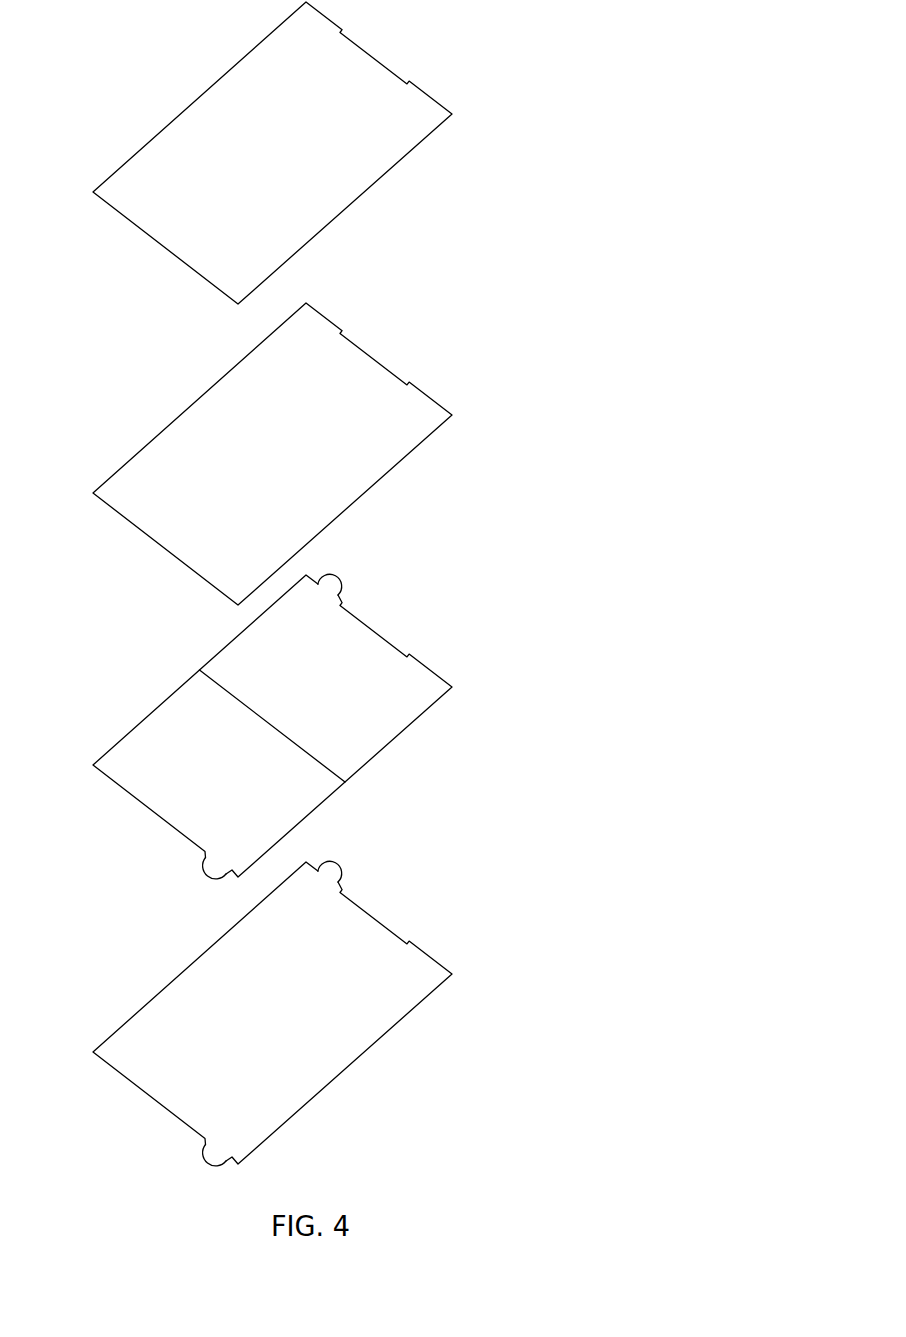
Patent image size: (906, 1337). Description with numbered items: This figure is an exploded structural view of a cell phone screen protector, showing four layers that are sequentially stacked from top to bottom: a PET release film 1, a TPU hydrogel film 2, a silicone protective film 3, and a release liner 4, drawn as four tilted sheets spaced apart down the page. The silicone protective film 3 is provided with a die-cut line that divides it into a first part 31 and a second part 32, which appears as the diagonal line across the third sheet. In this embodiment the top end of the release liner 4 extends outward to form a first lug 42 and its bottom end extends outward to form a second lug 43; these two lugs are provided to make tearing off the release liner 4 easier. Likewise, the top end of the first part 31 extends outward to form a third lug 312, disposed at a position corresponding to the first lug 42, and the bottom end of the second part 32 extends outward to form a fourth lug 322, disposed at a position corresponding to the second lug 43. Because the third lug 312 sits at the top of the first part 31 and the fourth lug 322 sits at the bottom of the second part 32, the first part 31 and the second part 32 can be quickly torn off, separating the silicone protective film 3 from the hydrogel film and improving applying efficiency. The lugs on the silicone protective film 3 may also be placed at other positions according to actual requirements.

The PET release film 1 is at (392, 127).
The TPU hydrogel film 2 is at (405, 425).
The silicone protective film 3 is at (319, 736).
The first part 31 is at (362, 674).
The third lug 312 is at (340, 583).
The second part 32 is at (253, 788).
The fourth lug 322 is at (214, 869).
The release liner 4 is at (305, 1013).
The first lug 42 is at (335, 871).
The second lug 43 is at (219, 1147).